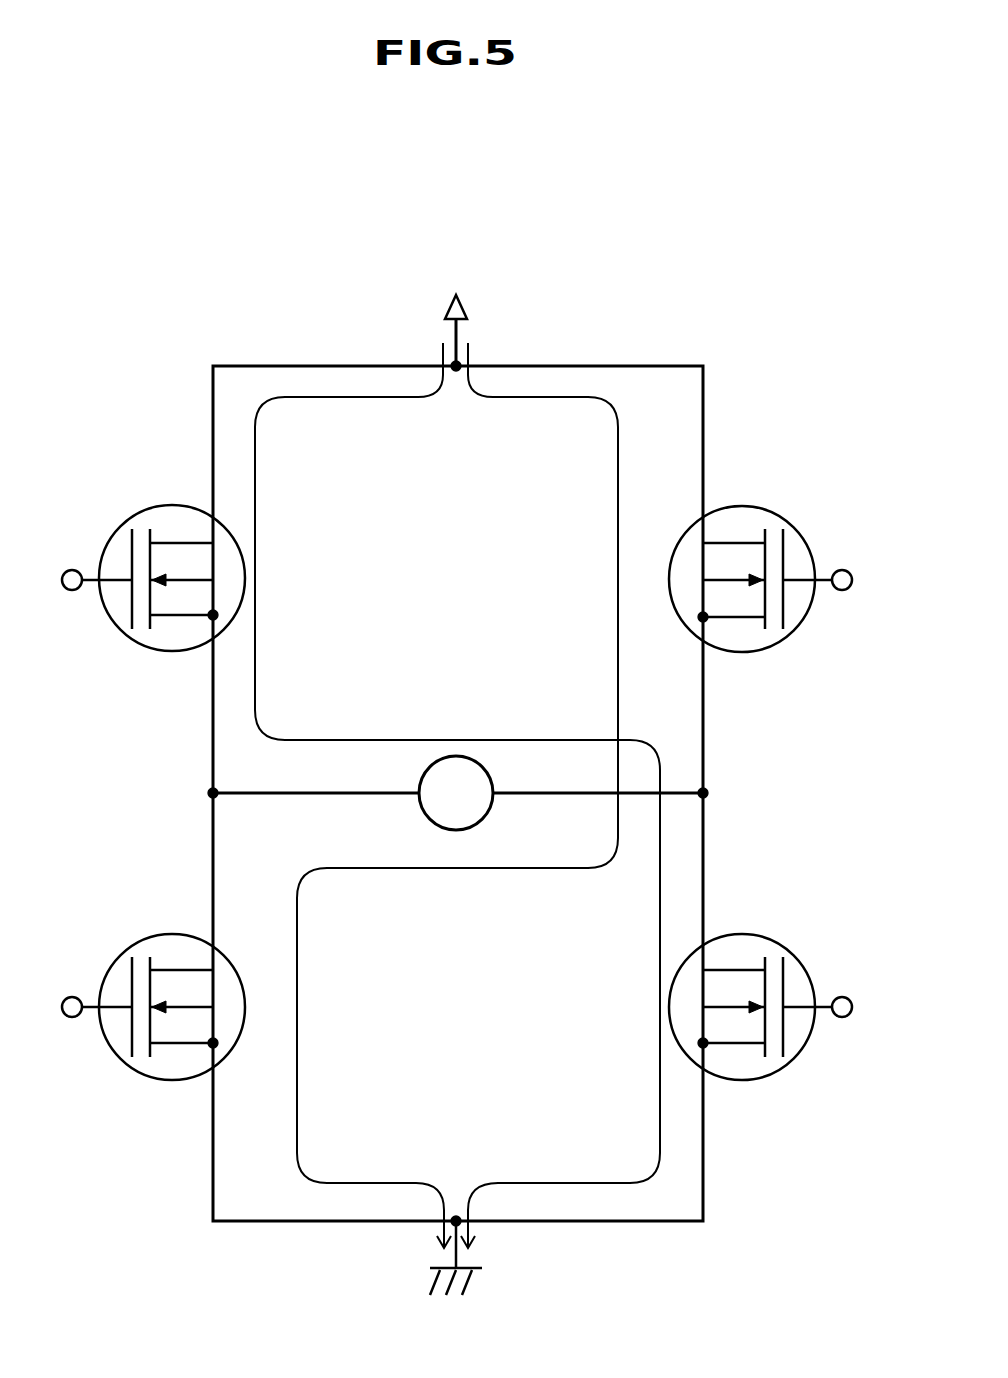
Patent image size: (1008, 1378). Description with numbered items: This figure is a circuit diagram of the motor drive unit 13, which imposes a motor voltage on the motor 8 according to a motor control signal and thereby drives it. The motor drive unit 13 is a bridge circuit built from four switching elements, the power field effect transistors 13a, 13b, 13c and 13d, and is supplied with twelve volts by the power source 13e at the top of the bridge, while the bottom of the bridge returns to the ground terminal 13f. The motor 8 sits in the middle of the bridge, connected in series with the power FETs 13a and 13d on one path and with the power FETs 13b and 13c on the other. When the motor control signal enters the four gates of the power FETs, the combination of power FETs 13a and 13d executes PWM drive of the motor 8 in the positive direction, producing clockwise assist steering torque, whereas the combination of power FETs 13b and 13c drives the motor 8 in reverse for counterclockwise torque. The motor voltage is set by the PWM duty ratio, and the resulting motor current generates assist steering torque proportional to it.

The motor drive unit 13 is at (625, 308).
The power FET 13a is at (155, 507).
The power FET 13b is at (760, 505).
The power FET 13c is at (157, 1080).
The power FET 13d is at (760, 1080).
The power source 13e is at (450, 298).
The ground terminal (GND) 13f is at (452, 1266).
The motor 8 is at (421, 812).